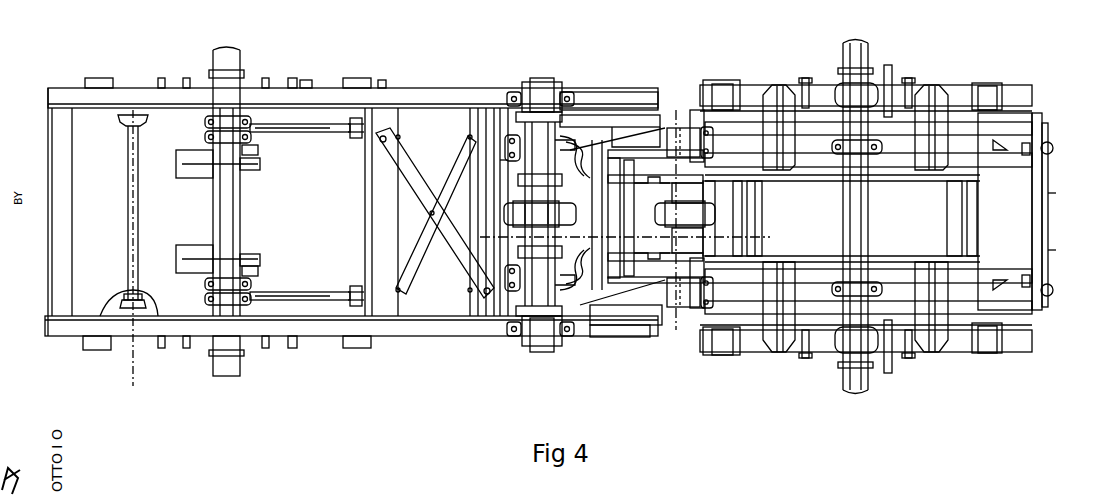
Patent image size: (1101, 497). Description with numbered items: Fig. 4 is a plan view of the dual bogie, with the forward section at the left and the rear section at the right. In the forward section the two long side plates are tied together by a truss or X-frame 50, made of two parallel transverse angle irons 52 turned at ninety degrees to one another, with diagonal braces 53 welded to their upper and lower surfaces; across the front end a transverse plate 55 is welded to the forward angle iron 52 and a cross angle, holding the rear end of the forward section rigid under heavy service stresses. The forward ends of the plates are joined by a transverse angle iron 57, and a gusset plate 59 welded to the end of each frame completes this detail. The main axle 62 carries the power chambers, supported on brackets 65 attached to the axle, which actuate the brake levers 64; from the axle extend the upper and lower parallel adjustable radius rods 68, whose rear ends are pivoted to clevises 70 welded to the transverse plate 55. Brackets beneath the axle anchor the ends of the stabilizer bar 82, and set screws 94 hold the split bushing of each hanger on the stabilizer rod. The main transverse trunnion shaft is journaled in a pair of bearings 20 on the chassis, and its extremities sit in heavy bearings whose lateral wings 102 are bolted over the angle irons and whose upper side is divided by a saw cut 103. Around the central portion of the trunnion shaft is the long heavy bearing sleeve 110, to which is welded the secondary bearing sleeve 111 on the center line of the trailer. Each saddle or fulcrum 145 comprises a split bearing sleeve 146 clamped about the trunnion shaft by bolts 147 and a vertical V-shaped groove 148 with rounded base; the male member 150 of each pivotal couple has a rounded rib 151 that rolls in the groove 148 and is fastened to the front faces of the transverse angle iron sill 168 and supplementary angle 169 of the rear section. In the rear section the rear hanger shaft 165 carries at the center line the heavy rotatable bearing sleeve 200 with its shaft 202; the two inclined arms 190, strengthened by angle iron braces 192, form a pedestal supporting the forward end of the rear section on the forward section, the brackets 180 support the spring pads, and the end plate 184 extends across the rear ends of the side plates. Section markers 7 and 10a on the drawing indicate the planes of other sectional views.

The roller 7 is at (487, 227).
The section line 10a is at (121, 276).
The bearings 20 is at (580, 330).
The truss or X-frame 50 is at (420, 172).
The transverse angle irons 52 is at (380, 214).
The diagonal braces 53 is at (418, 268).
The transverse plate 55 is at (365, 215).
The transverse angle iron 57 is at (72, 256).
The gusset plate 59 is at (48, 95).
The main axle 62 is at (878, 222).
The brake levers 64 is at (240, 245).
The brackets 65 is at (193, 245).
The radius rods 68 is at (300, 132).
The clevises 70 is at (356, 286).
The stabilizer bar 82 is at (128, 190).
The set screws 94 is at (100, 316).
The lateral wings 102 is at (567, 93).
The saw cut 103 is at (540, 346).
The bearing sleeve 110 is at (515, 270).
The secondary bearing sleeve 111 is at (516, 170).
The saddle or fulcrum 145 is at (510, 110).
The split bearing sleeve 146 is at (545, 150).
The bolts 147 is at (518, 146).
The V-shaped recess or groove 148 is at (590, 150).
The male member 150 is at (600, 150).
The rounded rib 151 is at (575, 150).
The rear hanger shaft 165 is at (680, 130).
The transverse angle iron sill 168 is at (622, 228).
The supplementary angle 169 is at (650, 130).
The brackets 180 is at (766, 350).
The end plate 184 is at (1046, 180).
The inclined arms 190 is at (646, 183).
The angle iron braces 192 is at (634, 196).
The rotatable bearing sleeve 200 is at (716, 242).
The shaft 202 is at (752, 212).